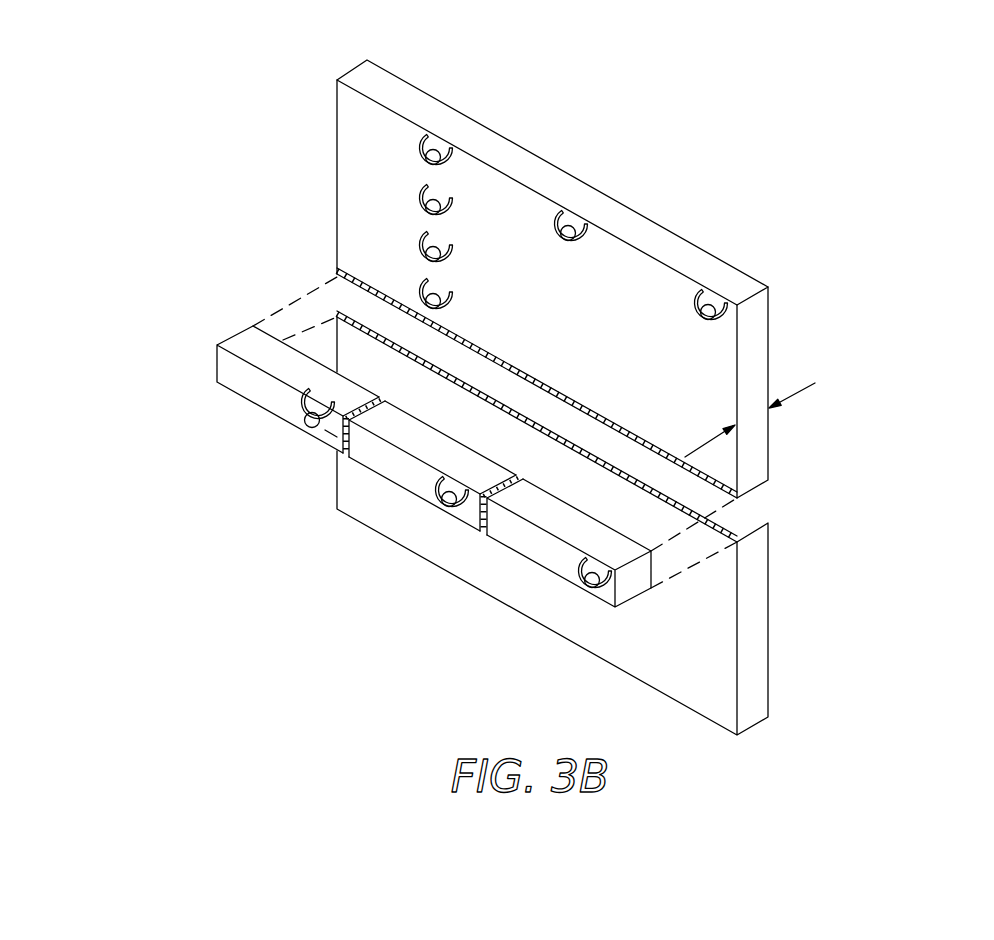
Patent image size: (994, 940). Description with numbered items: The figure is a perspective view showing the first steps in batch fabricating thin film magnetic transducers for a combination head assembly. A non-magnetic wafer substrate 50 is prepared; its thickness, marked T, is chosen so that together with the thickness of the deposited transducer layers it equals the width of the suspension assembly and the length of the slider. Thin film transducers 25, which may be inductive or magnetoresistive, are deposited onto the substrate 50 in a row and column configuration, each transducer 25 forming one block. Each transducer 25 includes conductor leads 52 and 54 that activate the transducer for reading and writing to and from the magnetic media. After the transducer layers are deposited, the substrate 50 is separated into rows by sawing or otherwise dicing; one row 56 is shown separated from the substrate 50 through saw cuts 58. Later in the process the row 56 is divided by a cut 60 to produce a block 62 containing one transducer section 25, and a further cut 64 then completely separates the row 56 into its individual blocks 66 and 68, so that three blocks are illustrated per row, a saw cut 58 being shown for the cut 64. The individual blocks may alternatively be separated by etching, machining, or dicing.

The thin film transducer 25 is at (568, 224).
The non-magnetic wafer substrate 50 is at (712, 278).
The conductor lead 52 is at (298, 412).
The conductor lead 54 is at (330, 434).
The row 56 is at (385, 465).
The saw cut 58 is at (766, 483).
The cut 60 is at (356, 412).
The block 62 is at (246, 343).
The further cut 64 is at (482, 534).
The block 66 is at (400, 480).
The block 68 is at (557, 562).